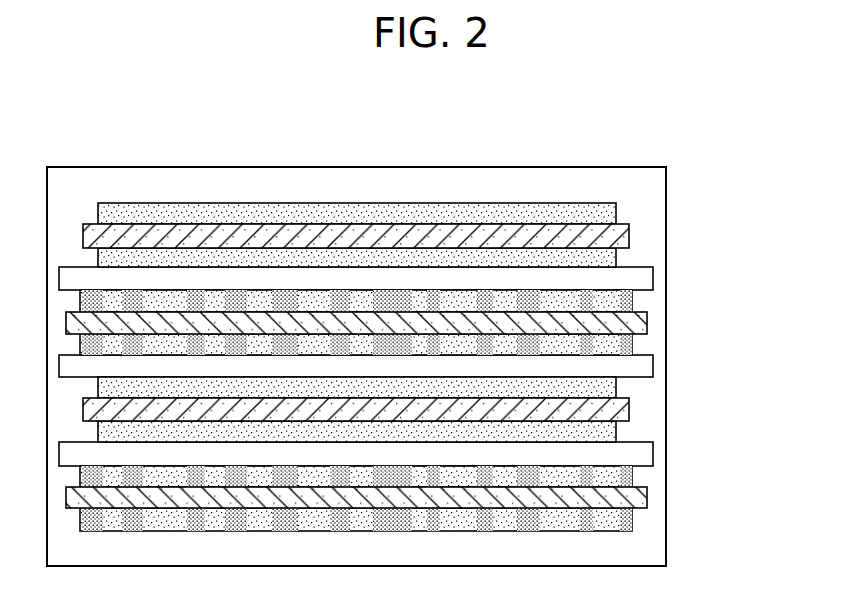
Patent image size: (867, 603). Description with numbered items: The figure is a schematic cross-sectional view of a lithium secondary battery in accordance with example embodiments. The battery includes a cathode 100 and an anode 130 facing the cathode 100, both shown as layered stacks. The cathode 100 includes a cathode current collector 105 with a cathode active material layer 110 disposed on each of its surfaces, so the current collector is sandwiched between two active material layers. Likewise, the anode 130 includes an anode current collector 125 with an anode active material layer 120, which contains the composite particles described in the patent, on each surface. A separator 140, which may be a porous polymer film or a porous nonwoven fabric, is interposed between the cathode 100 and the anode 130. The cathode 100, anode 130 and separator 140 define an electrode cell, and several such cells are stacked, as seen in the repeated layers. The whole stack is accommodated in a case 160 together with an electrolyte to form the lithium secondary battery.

The cathode 100 is at (441, 322).
The cathode current collector 105 is at (629, 236).
The cathode active material layer 110 is at (610, 215).
The anode active material layer 120 is at (632, 298).
The anode current collector 125 is at (647, 323).
The anode 130 is at (433, 410).
The separator 140 is at (538, 282).
The case 160 is at (666, 498).